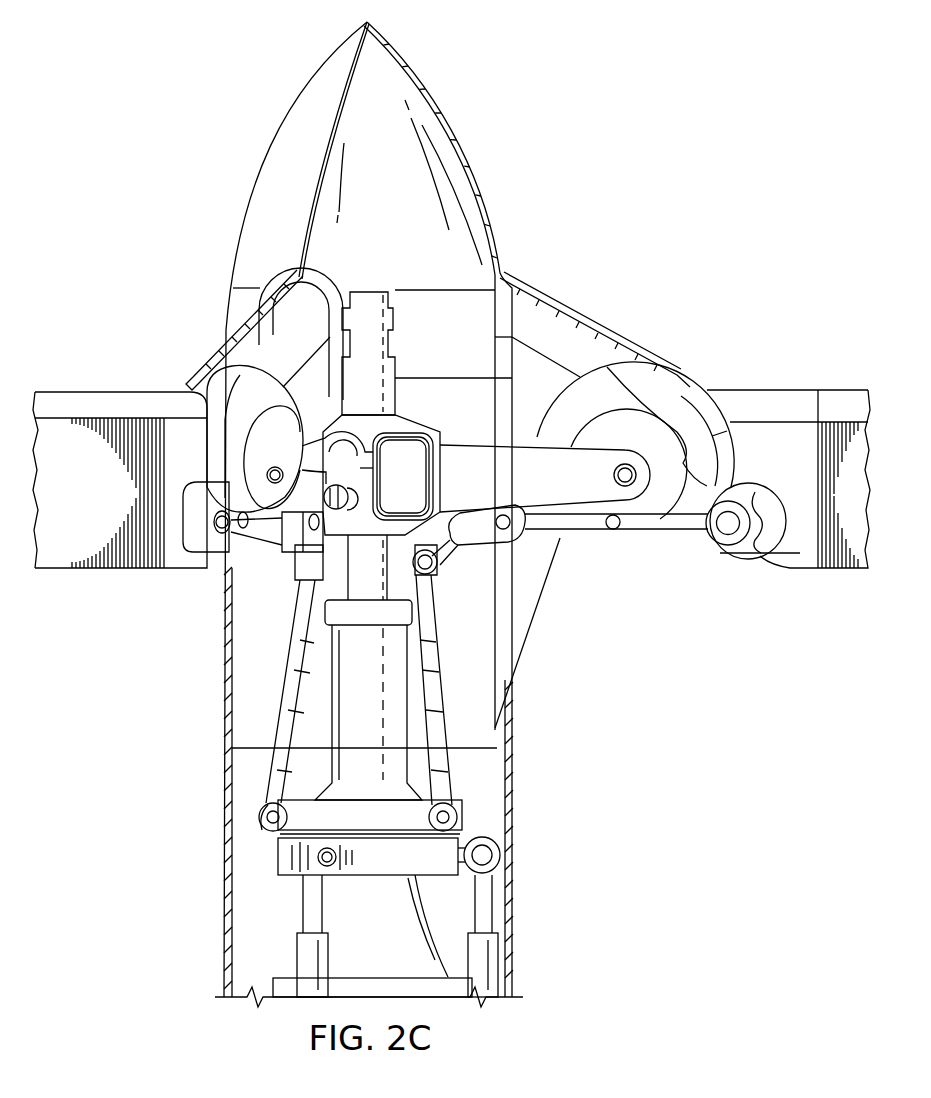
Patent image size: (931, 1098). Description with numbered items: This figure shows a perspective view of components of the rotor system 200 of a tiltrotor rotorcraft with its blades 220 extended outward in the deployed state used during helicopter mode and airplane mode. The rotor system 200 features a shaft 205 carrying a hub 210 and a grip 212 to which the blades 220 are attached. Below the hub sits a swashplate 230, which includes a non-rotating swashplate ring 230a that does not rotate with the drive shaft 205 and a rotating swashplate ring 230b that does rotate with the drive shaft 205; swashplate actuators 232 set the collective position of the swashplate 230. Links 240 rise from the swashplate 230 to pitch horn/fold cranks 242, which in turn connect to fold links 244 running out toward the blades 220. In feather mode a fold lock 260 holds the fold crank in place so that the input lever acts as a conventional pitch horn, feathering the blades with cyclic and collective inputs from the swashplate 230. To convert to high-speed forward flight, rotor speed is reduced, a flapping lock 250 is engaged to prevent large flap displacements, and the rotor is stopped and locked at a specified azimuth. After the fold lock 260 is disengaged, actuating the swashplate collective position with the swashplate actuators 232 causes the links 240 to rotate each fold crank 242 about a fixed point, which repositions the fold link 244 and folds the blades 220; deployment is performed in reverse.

The rotor system 200 is at (567, 256).
The shaft 205 is at (342, 595).
The hub 210 is at (387, 488).
The grip 212 is at (470, 445).
The blades 220 is at (85, 392).
The swashplate 230 is at (410, 888).
The non-rotating swashplate ring 230a is at (358, 876).
The rotating swashplate ring 230b is at (283, 836).
The swashplate actuators 232 is at (328, 965).
The links 240 is at (278, 683).
The pitch horn/fold crank 242 is at (478, 550).
The fold link 244 is at (663, 531).
The flapping lock 250 is at (398, 371).
The fold lock 260 is at (282, 472).